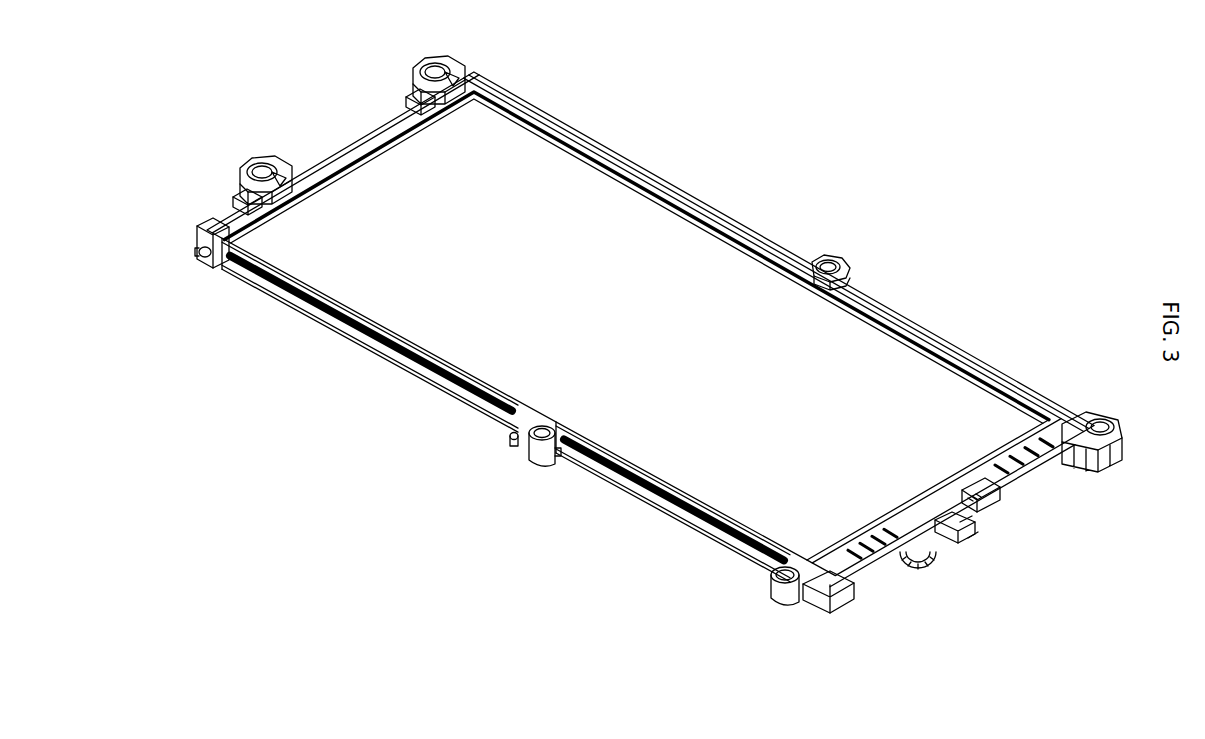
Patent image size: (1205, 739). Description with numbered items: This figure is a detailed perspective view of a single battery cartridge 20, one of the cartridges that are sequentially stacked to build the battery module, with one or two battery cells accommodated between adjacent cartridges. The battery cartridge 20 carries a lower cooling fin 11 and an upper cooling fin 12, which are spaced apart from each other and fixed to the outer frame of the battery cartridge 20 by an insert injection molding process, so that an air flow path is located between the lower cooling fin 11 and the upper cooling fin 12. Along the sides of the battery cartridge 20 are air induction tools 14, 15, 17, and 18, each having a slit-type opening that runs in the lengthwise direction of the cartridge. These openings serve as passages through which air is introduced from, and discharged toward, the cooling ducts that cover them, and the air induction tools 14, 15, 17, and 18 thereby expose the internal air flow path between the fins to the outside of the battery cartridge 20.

The battery cartridge 20 is at (302, 81).
The lower cooling fin 11 is at (378, 187).
The upper cooling fin 12 is at (433, 155).
The air induction tool 14 is at (640, 516).
The air induction tool 15 is at (363, 357).
The air induction tool 17 is at (964, 338).
The air induction tool 18 is at (633, 152).